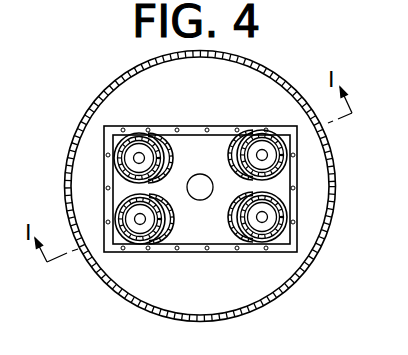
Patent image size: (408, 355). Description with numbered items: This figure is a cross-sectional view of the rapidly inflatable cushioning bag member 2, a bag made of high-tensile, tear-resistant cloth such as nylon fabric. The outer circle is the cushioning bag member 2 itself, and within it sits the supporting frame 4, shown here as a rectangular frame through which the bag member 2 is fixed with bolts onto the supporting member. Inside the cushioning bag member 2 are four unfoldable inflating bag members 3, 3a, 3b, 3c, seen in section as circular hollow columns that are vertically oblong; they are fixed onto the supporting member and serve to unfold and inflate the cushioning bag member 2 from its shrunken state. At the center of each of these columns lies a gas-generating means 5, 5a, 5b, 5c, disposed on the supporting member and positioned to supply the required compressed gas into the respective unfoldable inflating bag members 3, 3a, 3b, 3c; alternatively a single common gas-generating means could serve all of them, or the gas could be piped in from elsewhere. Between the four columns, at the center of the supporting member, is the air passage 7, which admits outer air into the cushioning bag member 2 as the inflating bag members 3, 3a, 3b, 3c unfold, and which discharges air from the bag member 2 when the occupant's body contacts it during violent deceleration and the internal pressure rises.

The cushioning bag member 2 is at (336, 195).
The unfoldable inflating bag member 3 is at (248, 133).
The unfoldable inflating bag member 3a is at (137, 252).
The unfoldable inflating bag member 3b is at (268, 246).
The unfoldable inflating bag member 3c is at (133, 136).
The supporting frame 4 is at (194, 127).
The gas-generating means 5 is at (259, 155).
The gas-generating means 5a is at (136, 218).
The gas-generating means 5b is at (266, 216).
The gas-generating means 5c is at (145, 158).
The air passage 7 is at (200, 200).